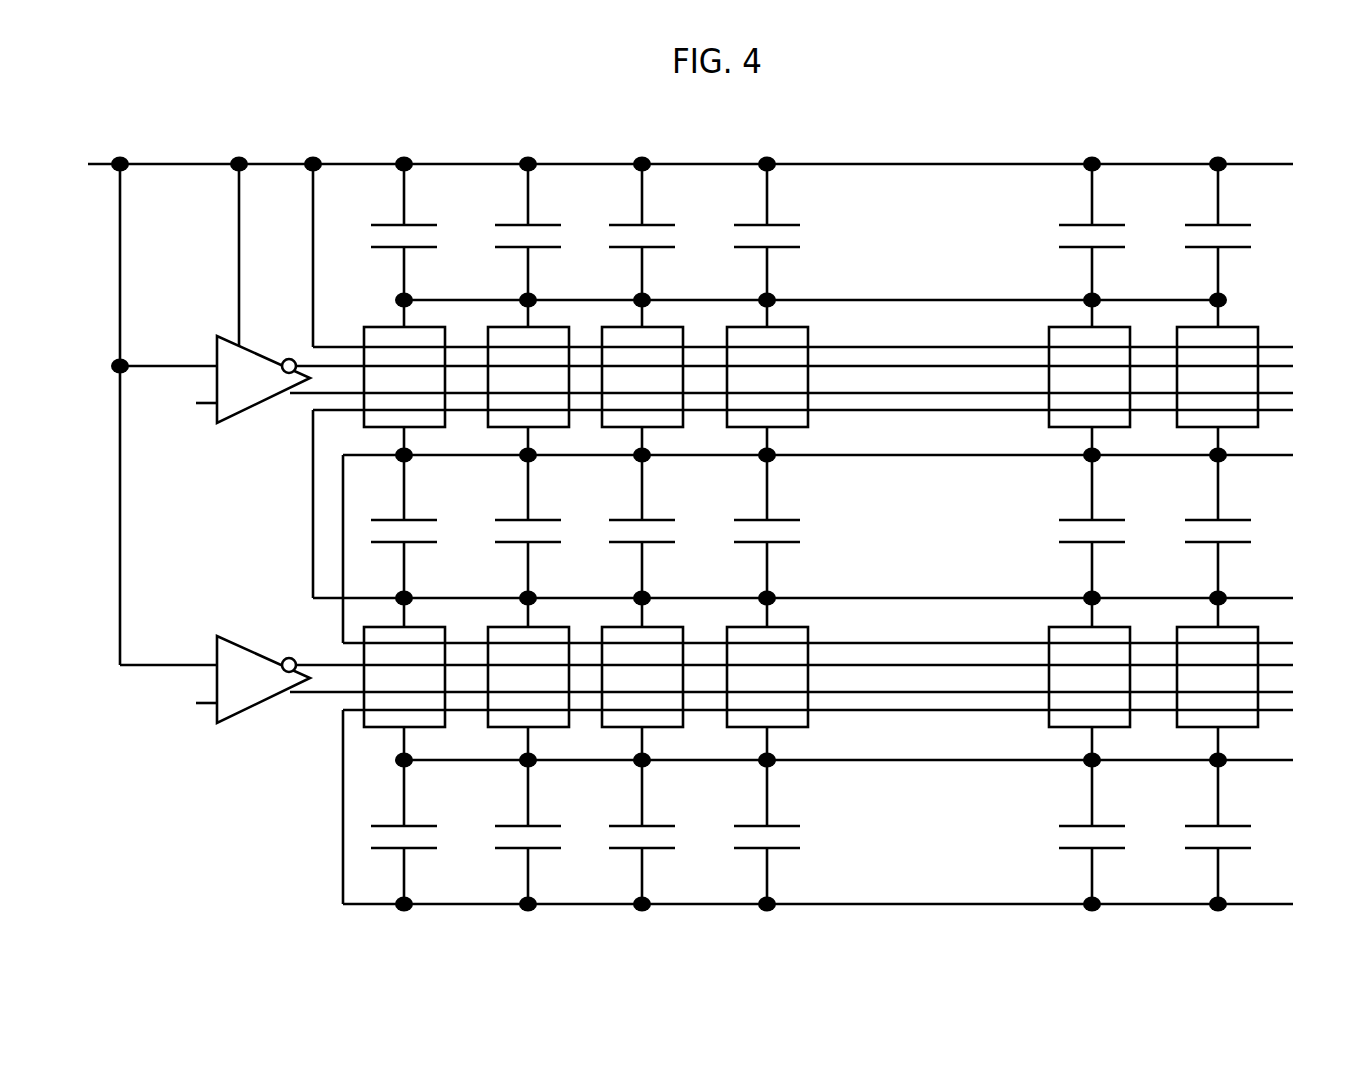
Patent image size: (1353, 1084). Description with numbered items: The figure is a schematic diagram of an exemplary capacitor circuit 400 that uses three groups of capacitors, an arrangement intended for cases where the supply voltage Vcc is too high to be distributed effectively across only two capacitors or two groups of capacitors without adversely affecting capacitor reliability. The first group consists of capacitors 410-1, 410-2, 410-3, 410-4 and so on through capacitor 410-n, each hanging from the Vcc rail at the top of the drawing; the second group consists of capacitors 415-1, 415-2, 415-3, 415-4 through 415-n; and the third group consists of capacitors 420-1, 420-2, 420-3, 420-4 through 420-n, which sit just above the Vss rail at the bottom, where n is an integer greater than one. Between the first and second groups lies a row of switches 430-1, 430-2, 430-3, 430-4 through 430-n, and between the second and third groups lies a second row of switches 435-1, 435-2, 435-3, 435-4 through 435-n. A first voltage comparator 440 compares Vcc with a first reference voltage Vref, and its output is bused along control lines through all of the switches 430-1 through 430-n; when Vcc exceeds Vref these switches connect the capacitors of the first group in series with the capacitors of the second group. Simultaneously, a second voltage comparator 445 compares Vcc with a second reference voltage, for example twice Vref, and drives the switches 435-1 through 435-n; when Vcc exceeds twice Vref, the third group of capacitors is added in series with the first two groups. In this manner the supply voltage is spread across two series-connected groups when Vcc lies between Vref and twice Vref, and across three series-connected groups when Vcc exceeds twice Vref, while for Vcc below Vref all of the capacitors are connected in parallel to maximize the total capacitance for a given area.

The capacitor circuit 400 is at (862, 117).
The capacitor 410-1 is at (447, 225).
The capacitor 410-2 is at (571, 225).
The capacitor 410-3 is at (685, 225).
The capacitor 410-4 is at (810, 225).
The capacitor 410-n is at (1266, 225).
The capacitor 415-1 is at (447, 520).
The capacitor 415-2 is at (571, 520).
The capacitor 415-3 is at (685, 520).
The capacitor 415-4 is at (810, 520).
The capacitor 415-n is at (1266, 520).
The capacitor 420-1 is at (447, 826).
The capacitor 420-2 is at (571, 826).
The capacitor 420-3 is at (685, 826).
The capacitor 420-4 is at (810, 826).
The capacitor 420-n is at (1266, 826).
The switch 430-1 is at (404, 377).
The switch 430-2 is at (528, 377).
The switch 430-3 is at (642, 377).
The switch 430-4 is at (767, 377).
The switch 430-n is at (1217, 377).
The switch 435-1 is at (404, 679).
The switch 435-2 is at (528, 679).
The switch 435-3 is at (642, 679).
The switch 435-4 is at (767, 679).
The switch 435-n is at (1217, 679).
The first voltage comparator 440 is at (228, 392).
The second voltage comparator 445 is at (228, 691).